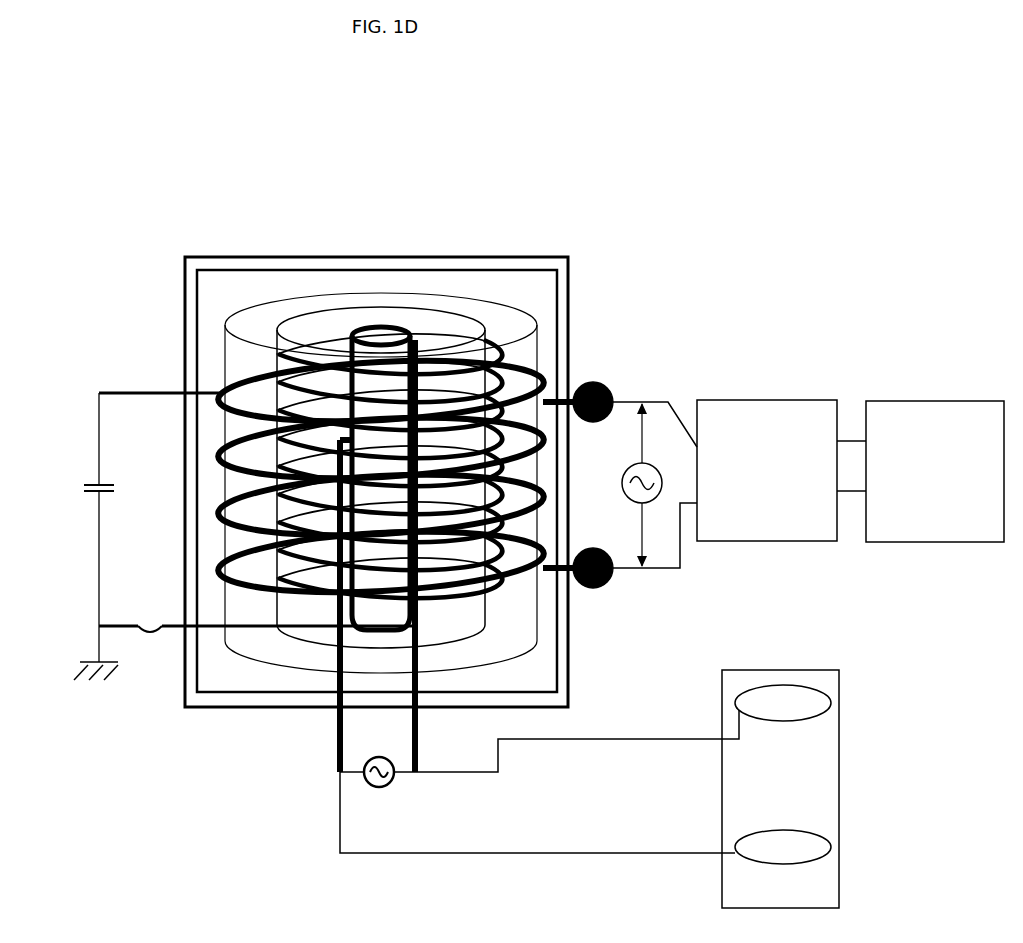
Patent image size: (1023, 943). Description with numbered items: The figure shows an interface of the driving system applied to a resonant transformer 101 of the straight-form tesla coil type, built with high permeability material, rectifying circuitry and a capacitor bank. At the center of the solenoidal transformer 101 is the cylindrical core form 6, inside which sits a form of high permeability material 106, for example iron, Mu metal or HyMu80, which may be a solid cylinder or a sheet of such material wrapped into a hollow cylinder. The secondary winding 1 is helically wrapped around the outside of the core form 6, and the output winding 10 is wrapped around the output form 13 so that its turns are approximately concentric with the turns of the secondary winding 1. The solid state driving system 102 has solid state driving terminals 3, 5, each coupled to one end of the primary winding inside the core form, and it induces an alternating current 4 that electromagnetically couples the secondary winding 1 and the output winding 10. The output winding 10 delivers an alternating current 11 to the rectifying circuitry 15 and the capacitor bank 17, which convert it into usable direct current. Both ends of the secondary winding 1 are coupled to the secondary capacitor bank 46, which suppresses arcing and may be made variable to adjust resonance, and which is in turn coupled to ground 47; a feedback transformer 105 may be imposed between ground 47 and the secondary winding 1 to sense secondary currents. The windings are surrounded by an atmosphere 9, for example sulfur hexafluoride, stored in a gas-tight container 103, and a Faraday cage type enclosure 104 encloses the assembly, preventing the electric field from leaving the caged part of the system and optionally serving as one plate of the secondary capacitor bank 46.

The secondary winding 1 is at (276, 441).
The solid state driving terminal 3 is at (783, 703).
The alternating current 4 is at (539, 781).
The solid state driving terminal 5 is at (783, 847).
The core form 6 is at (333, 605).
The atmosphere 9 is at (531, 680).
The output winding 10 is at (216, 487).
The alternating current 11 is at (655, 485).
The induction coil 13 is at (213, 596).
The rectifying circuitry 15 is at (781, 470).
The capacitor bank 17 is at (935, 471).
The secondary capacitor bank 46 is at (85, 479).
The ground 47 is at (82, 653).
The resonant transformer 101 is at (135, 258).
The solid state driving system 102 is at (780, 789).
The container 103 is at (471, 706).
The Faraday cage type enclosure 104 is at (577, 622).
The transformer 105 is at (257, 642).
The form of high permeability material 106 is at (414, 330).